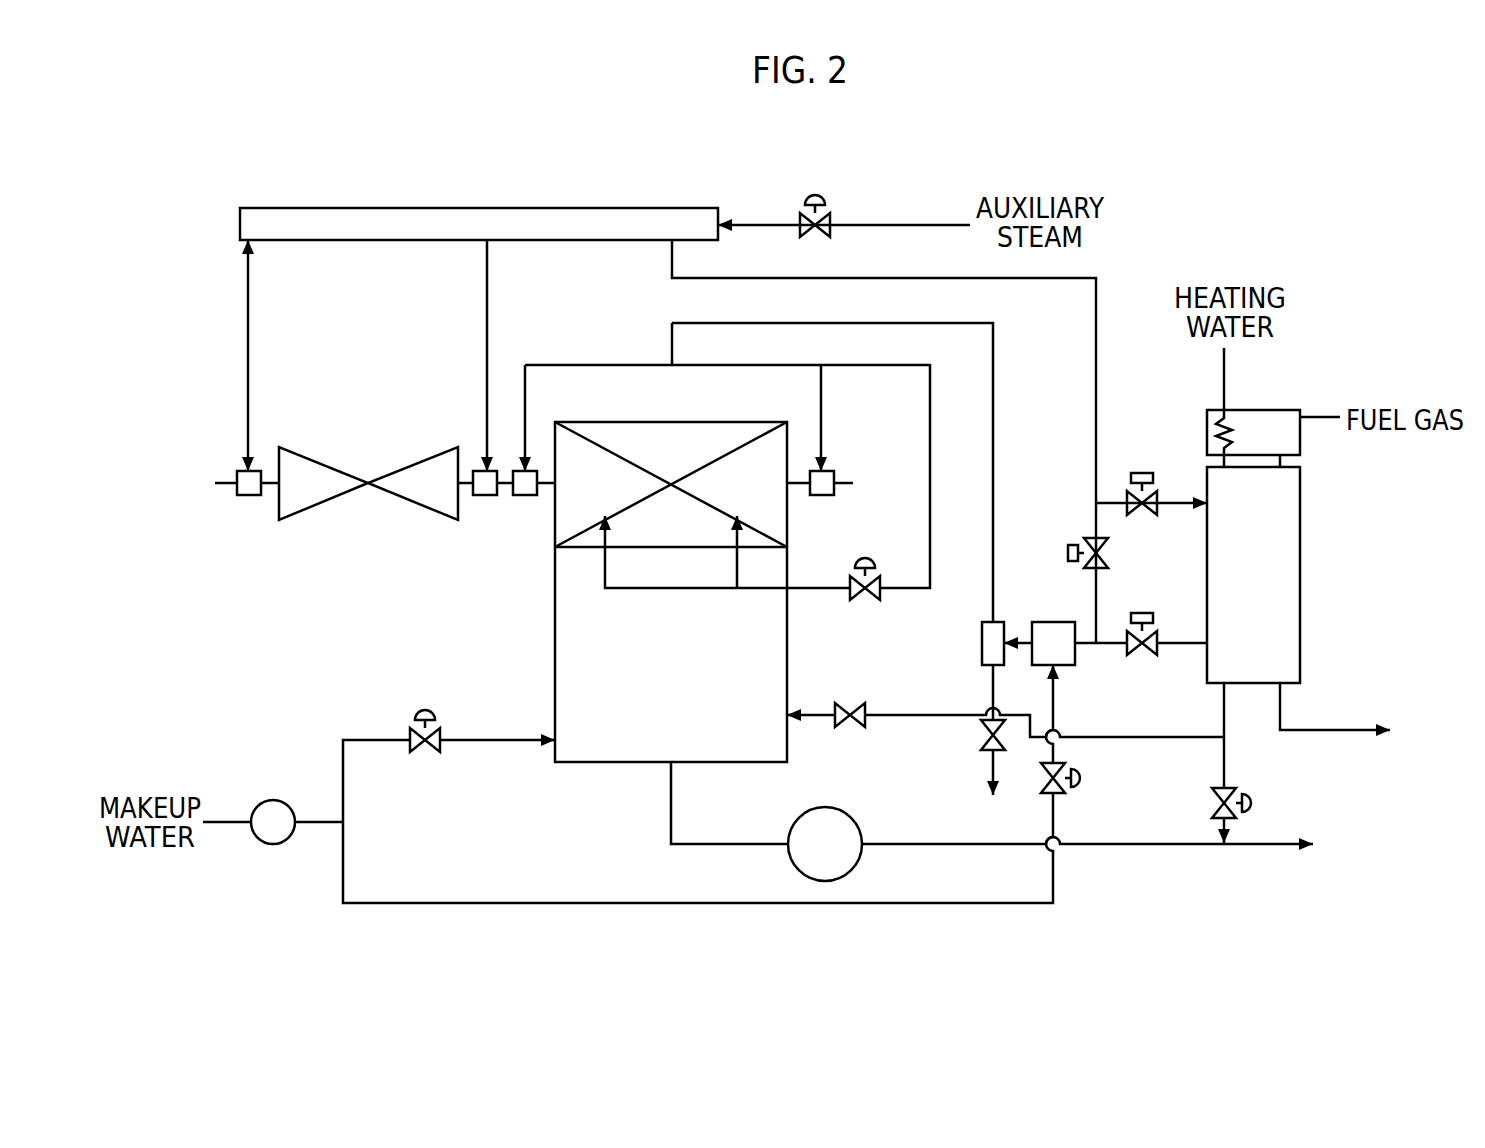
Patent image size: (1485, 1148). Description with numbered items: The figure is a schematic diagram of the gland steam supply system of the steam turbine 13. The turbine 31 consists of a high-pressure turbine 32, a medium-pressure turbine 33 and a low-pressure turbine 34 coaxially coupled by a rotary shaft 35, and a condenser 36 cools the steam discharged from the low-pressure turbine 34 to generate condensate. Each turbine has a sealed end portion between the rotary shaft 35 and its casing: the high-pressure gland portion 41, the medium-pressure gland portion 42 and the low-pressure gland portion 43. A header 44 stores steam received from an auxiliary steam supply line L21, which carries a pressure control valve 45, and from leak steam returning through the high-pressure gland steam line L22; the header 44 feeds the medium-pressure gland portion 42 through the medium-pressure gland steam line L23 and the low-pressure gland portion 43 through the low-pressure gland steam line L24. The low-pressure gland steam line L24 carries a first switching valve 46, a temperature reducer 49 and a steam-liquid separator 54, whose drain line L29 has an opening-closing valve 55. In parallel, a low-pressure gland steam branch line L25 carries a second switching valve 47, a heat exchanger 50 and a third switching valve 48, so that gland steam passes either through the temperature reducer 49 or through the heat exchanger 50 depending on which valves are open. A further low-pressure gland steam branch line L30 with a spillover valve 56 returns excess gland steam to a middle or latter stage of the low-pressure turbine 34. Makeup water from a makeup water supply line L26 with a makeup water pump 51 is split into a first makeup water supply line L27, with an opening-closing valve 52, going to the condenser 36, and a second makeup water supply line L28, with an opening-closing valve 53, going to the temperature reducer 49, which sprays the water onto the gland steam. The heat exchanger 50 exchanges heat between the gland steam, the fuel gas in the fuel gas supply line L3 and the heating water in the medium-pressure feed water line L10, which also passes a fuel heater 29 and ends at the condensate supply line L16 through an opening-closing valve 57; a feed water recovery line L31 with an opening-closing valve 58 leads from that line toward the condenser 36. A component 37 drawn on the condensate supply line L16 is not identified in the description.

The steam turbine 13 is at (405, 166).
The header 44 is at (562, 207).
The pressure control valve 45 is at (830, 210).
The auxiliary steam supply line L21 is at (912, 224).
The high-pressure gland steam line L22 is at (247, 284).
The medium-pressure gland steam line L23 is at (486, 284).
The low-pressure gland steam line L24 is at (1097, 290).
The low-pressure gland steam branch line L30 is at (929, 388).
The spillover valve 56 is at (866, 602).
The rotary shaft 35 is at (228, 480).
The high-pressure gland portion 41 is at (250, 496).
The high-pressure turbine 32 is at (324, 490).
The medium-pressure turbine 33 is at (423, 490).
The medium-pressure gland portion 42 is at (473, 465).
The low-pressure gland portion 43 is at (506, 465).
The low-pressure turbine 34 is at (575, 503).
The turbine 31 is at (535, 592).
The condenser 36 is at (789, 670).
The medium-pressure feed water line L10 is at (1223, 376).
The fuel heater 29 is at (1250, 409).
The fuel gas supply line L3 is at (1310, 416).
The low-pressure gland steam branch line L25 is at (1180, 500).
The second switching valve 47 is at (1146, 516).
The first switching valve 46 is at (1088, 545).
The heat exchanger 50 is at (1301, 499).
The temperature reducer 49 is at (1046, 621).
The steam-liquid separator 54 is at (981, 641).
The third switching valve 48 is at (1146, 656).
The drain line L29 is at (992, 698).
The opening-closing valve 55 is at (981, 735).
The opening-closing valve 53 is at (1040, 788).
The feed water recovery line L31 is at (1108, 740).
The opening-closing valve 58 is at (858, 728).
The opening-closing valve 57 is at (1211, 804).
The condensate supply line L16 is at (1132, 846).
The condensate pump 37 is at (822, 807).
The second makeup water supply line L28 is at (716, 905).
The first makeup water supply line L27 is at (494, 738).
The opening-closing valve 52 is at (432, 753).
The makeup water supply line L26 is at (218, 818).
The makeup water pump 51 is at (272, 800).